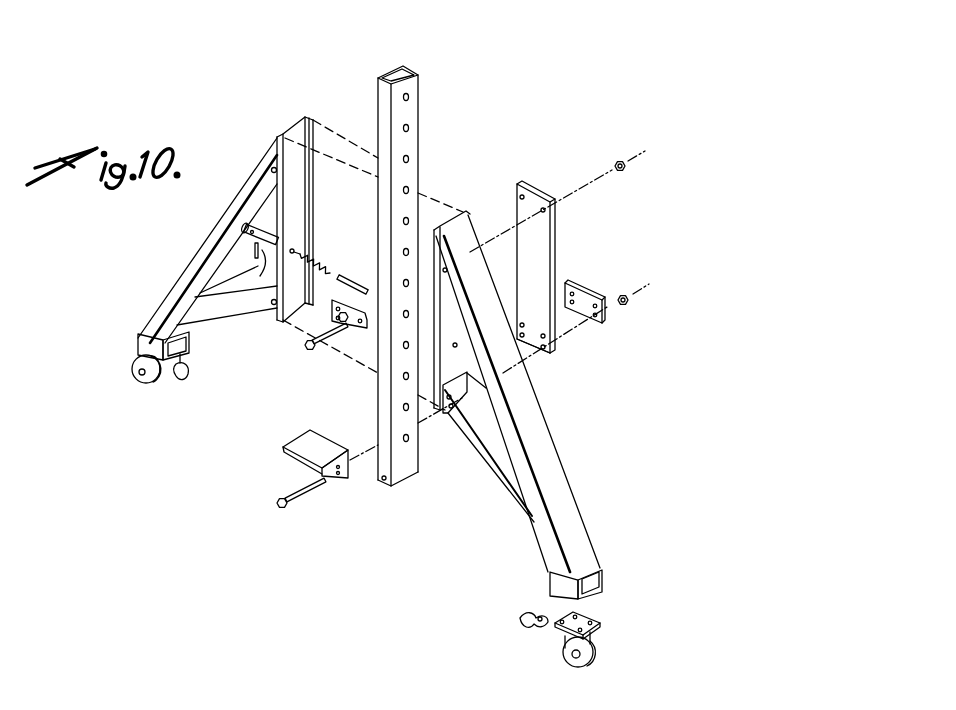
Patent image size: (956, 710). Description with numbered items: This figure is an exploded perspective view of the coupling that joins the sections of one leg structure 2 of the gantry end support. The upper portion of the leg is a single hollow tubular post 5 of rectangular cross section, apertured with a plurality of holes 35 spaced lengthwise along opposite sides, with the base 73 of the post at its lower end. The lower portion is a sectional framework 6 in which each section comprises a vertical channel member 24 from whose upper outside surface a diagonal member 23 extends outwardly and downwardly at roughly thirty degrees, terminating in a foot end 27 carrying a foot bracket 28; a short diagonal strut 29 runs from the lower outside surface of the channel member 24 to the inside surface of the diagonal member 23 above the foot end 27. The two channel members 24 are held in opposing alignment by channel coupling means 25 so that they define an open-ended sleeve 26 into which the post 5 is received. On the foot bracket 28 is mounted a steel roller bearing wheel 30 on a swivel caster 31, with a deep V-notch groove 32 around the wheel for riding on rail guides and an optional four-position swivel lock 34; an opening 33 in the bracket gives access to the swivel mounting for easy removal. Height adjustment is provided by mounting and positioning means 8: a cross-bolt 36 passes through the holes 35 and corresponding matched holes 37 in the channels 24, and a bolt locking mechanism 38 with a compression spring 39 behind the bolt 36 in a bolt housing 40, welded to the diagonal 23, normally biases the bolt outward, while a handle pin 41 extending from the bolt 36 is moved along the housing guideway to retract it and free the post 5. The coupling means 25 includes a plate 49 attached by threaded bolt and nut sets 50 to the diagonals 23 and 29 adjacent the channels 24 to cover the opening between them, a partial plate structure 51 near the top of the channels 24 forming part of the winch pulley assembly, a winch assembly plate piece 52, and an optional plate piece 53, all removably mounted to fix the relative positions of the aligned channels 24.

The leg structure 2 is at (421, 77).
The hollow tubular post 5 is at (420, 117).
The sectional framework 6 is at (549, 403).
The mounting and positioning means 8 is at (247, 217).
The diagonal member 23 is at (215, 252).
The channel member 24 is at (281, 133).
The channel coupling means 25 is at (558, 222).
The open-ended sleeve 26 is at (306, 115).
The foot end 27 is at (150, 333).
The foot bracket 28 is at (140, 345).
The short diagonal strut 29 is at (250, 305).
The steel roller bearing wheel 30 is at (150, 384).
The swivel caster 31 is at (148, 361).
The deep V-notch groove 32 is at (600, 658).
The opening 33 is at (191, 348).
The four-position swivel lock 34 is at (192, 368).
The holes 35 is at (409, 129).
The cross-bolt 36 is at (352, 280).
The matched holes 37 is at (309, 232).
The bolt locking mechanism 38 is at (233, 271).
The compression spring 39 is at (326, 263).
The bolt housing 40 is at (266, 231).
The handle pin 41 is at (255, 248).
The plate 49 is at (538, 195).
The threaded bolt and nut sets 50 is at (311, 352).
The partial plate structure 51 is at (360, 334).
The winch assembly plate piece 52 is at (291, 445).
The optional plate piece 53 is at (583, 284).
The base of post member 73 is at (384, 482).